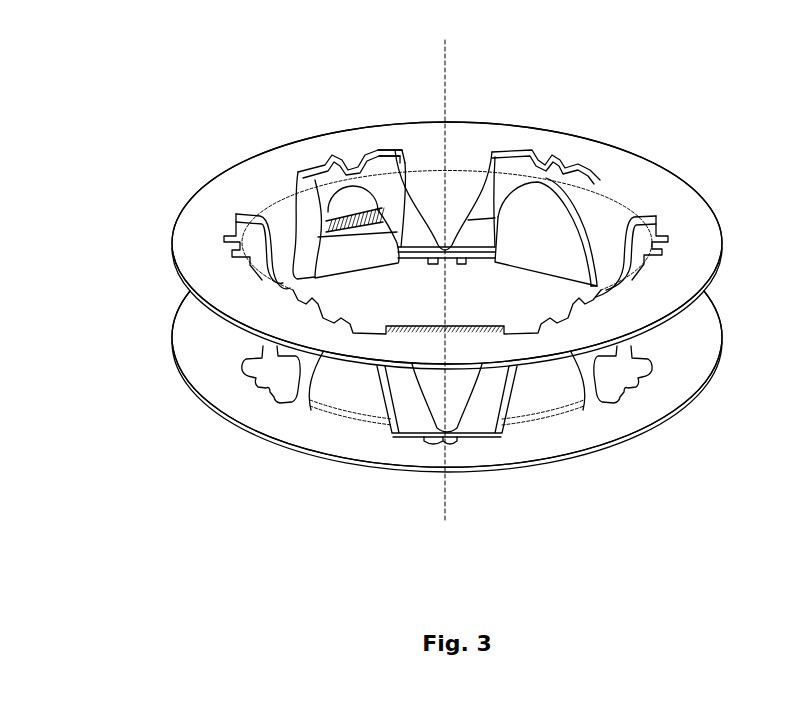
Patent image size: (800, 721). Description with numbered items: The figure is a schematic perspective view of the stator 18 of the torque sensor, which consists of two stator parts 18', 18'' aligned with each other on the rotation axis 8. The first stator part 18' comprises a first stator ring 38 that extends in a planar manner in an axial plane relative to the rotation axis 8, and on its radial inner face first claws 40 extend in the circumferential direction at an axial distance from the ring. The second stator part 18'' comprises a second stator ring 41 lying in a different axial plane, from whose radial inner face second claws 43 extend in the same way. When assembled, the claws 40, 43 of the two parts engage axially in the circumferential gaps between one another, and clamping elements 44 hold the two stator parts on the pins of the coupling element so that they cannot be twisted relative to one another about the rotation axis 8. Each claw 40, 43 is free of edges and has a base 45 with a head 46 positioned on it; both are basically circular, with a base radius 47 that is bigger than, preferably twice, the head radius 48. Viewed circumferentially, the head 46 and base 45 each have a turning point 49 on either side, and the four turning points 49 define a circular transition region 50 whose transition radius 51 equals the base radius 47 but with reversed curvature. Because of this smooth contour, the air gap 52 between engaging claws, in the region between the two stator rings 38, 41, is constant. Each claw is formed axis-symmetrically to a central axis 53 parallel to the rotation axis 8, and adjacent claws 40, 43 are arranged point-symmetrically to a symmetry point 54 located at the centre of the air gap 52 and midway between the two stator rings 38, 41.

The rotation axis 8 is at (447, 55).
The stator 18 is at (414, 263).
The first stator part 18' is at (444, 241).
The second stator part 18'' is at (425, 423).
The first stator ring 38 is at (196, 190).
The first claws 40 is at (470, 192).
The second stator ring 41 is at (172, 337).
The second claws 43 is at (585, 166).
The clamping elements 44 is at (224, 238).
The base 45 is at (338, 250).
The head 46 is at (372, 150).
The base radius 47 is at (406, 233).
The head radius 48 is at (367, 179).
The turning point 49 is at (321, 223).
The transition region 50 is at (372, 210).
The transition radius 51 is at (300, 185).
The air gap 52 is at (494, 209).
The central axis 53 is at (537, 253).
The symmetry point 54 is at (588, 214).